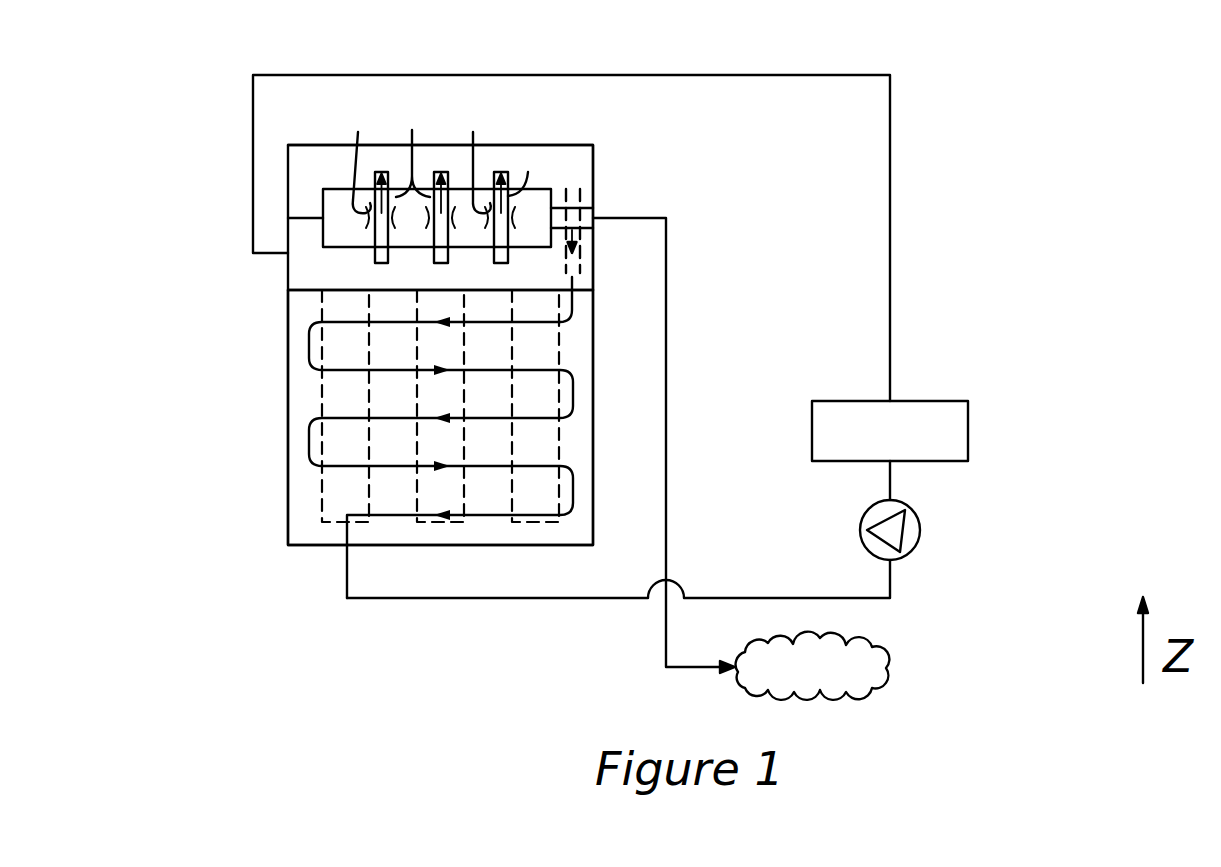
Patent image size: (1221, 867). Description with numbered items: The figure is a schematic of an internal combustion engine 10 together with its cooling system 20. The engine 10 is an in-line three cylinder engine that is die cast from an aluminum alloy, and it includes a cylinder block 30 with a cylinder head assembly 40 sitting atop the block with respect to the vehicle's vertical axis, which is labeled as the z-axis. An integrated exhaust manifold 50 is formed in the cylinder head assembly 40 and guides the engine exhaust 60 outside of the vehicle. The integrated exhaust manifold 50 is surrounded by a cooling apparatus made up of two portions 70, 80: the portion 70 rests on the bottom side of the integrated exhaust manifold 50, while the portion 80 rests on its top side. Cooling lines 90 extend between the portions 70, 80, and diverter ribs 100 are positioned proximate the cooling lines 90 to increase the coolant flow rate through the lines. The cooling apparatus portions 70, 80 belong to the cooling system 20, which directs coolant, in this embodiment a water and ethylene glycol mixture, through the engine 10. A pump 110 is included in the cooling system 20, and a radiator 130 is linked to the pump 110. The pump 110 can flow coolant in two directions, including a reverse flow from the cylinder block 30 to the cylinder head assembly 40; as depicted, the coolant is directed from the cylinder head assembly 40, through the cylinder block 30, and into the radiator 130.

The internal combustion engine 10 is at (167, 146).
The cooling system 20 is at (1036, 106).
The cylinder block 30 is at (307, 538).
The cylinder head assembly 40 is at (227, 146).
The integrated exhaust manifold 50 is at (331, 193).
The engine exhaust 60 is at (885, 677).
The cooling apparatus portion 70 is at (590, 258).
The cooling apparatus portion 80 is at (575, 158).
The cooling lines 90 is at (470, 152).
The diverter ribs 100 is at (417, 160).
The pump 110 is at (918, 512).
The radiator 130 is at (968, 430).